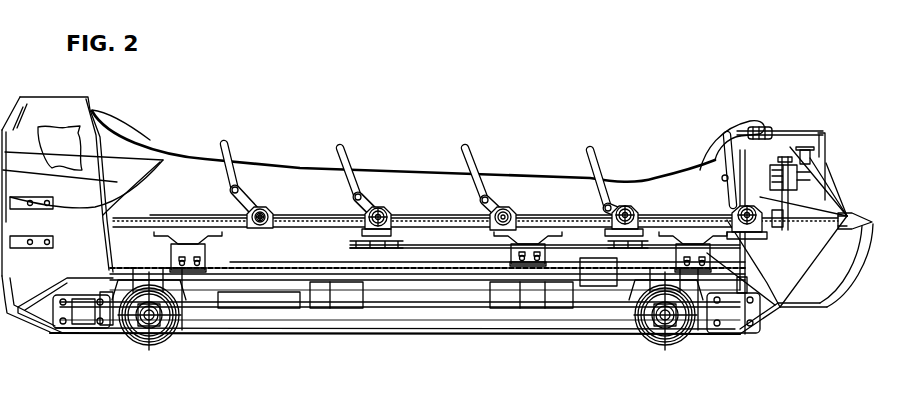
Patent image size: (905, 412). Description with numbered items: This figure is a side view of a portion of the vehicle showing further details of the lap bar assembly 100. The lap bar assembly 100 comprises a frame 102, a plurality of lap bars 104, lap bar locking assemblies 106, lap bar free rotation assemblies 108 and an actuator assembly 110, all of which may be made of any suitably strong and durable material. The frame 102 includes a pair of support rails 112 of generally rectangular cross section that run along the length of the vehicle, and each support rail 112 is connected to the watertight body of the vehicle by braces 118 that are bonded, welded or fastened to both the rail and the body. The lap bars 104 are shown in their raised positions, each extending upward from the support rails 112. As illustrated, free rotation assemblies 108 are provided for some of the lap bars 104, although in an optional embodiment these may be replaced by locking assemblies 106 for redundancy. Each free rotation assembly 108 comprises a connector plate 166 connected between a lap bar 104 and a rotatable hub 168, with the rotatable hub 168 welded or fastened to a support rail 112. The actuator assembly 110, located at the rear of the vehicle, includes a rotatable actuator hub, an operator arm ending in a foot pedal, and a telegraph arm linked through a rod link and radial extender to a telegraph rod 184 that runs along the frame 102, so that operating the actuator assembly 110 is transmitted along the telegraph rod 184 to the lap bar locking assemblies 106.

The lap bar assembly 100 is at (477, 208).
The frame 102 is at (175, 212).
The lap bar 104 is at (241, 145).
The lap bar locking assembly 106 is at (389, 210).
The lap bar free rotation assembly 108 is at (271, 212).
The actuator assembly 110 is at (802, 162).
The support rail 112 is at (291, 231).
The brace 118 is at (172, 249).
The connector plate 166 is at (243, 202).
The rotatable hub 168 is at (274, 214).
The telegraph rod 184 is at (426, 245).